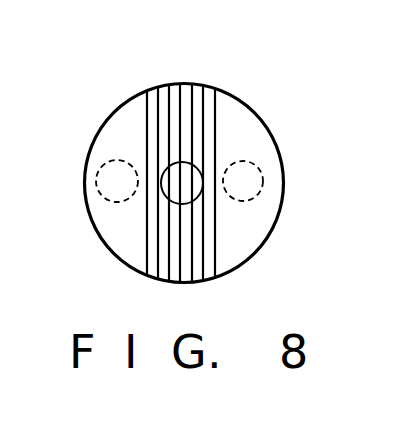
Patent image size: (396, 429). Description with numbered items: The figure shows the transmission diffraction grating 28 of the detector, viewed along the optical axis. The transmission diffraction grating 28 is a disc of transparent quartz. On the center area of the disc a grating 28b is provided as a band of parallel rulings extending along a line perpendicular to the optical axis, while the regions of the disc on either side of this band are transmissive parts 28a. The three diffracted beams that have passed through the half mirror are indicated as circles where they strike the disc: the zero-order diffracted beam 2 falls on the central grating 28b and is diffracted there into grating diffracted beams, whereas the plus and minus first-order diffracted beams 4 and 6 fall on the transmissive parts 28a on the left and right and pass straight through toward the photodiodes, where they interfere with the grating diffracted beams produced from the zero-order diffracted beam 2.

The transmission diffraction grating 28 is at (256, 113).
The transmissive parts 28a is at (113, 124).
The grating 28b is at (180, 98).
The 0-order diffracted beam 2 is at (167, 197).
The +1st-order diffracted beam 4 is at (97, 178).
The -1st-order diffracted beam 6 is at (263, 183).